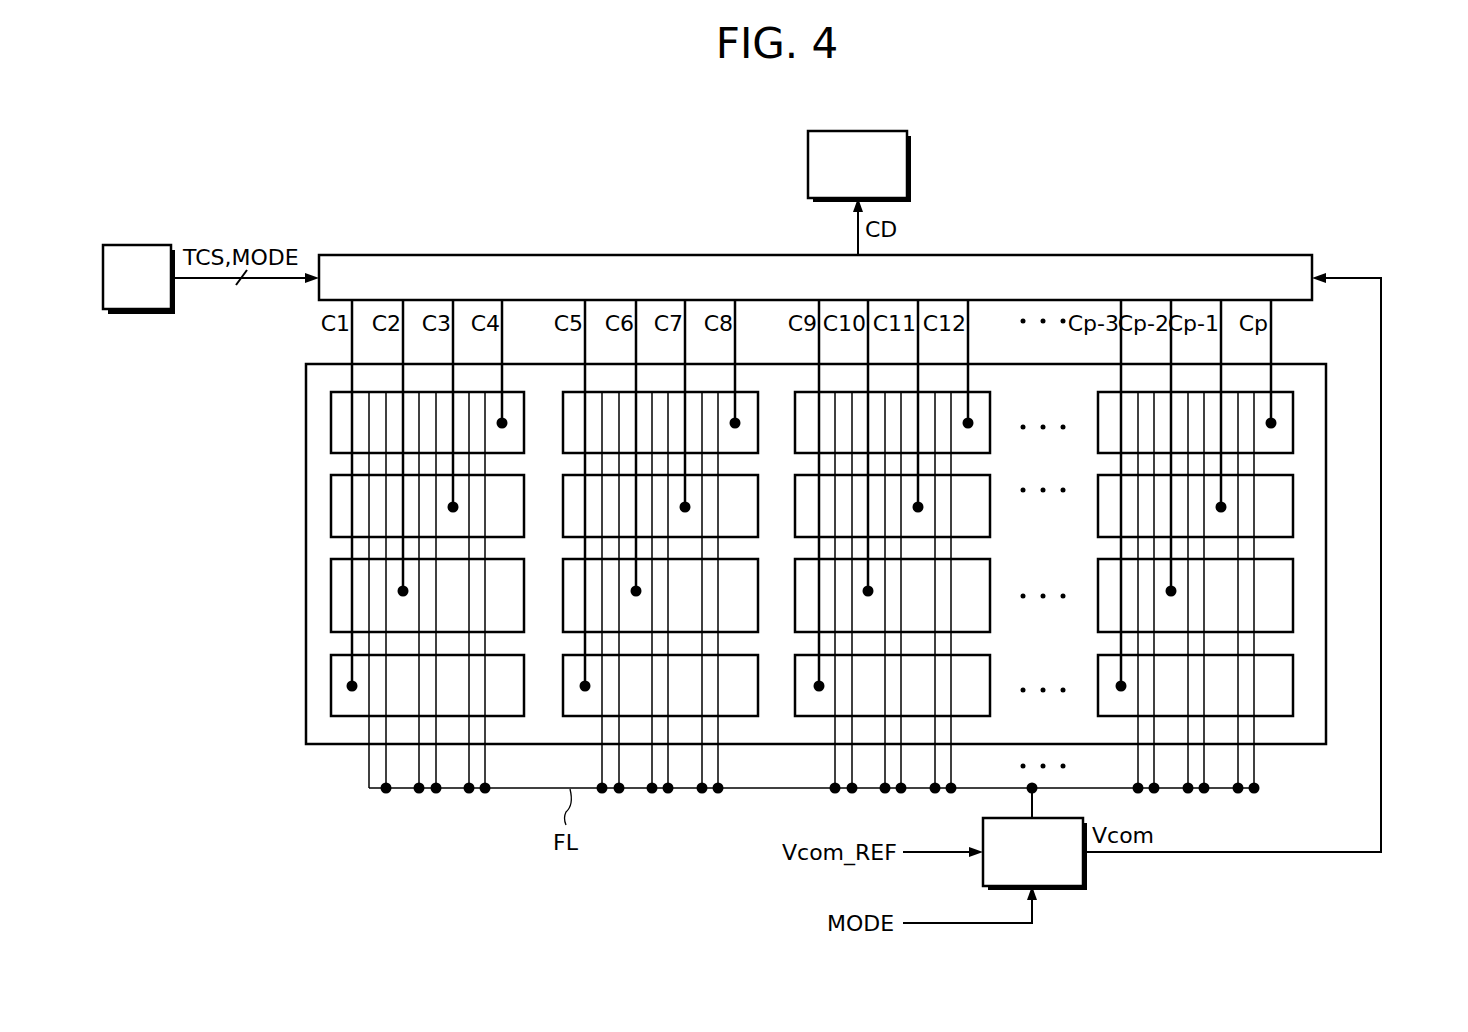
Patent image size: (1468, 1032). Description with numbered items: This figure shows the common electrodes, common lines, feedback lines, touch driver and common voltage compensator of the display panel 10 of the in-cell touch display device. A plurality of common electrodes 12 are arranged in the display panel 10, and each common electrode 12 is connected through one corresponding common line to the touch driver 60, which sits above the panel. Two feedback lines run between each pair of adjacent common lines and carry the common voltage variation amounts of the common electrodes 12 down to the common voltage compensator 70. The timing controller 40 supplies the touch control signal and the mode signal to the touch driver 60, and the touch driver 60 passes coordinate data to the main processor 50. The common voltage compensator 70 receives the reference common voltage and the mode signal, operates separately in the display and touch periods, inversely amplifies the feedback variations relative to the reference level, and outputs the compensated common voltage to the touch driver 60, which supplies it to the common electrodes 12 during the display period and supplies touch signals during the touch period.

The display panel 10 is at (1326, 500).
The common electrodes 12 is at (1293, 433).
The timing controller 40 is at (149, 244).
The main processor 50 is at (907, 174).
The touch driver 60 is at (1158, 254).
The common voltage compensator 70 is at (1087, 874).